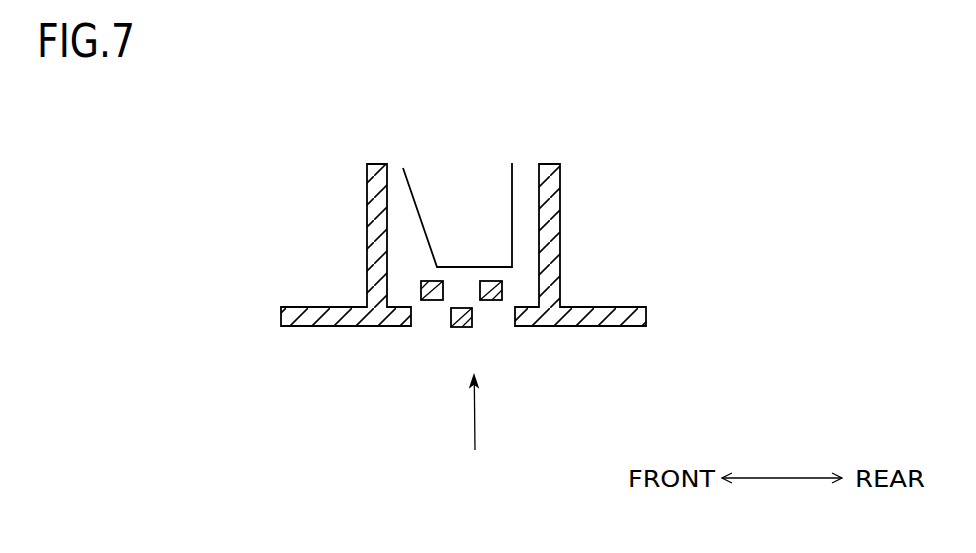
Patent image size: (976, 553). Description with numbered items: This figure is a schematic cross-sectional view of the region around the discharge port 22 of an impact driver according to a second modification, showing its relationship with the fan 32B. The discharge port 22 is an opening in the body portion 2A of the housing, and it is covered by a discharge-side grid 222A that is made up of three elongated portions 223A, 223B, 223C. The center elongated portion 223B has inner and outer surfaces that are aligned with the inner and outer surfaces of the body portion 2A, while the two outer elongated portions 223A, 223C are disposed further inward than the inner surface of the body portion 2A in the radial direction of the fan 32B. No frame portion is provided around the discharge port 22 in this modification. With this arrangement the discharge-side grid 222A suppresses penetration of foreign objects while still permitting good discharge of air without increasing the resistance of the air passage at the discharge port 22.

The body portion 2A is at (295, 315).
The fan 32B is at (425, 195).
The discharge port 22 is at (465, 219).
The elongated portion 223A is at (422, 283).
The elongated portion 223B is at (385, 244).
The elongated portion 223C is at (503, 283).
The discharge-side grid 222A is at (476, 427).